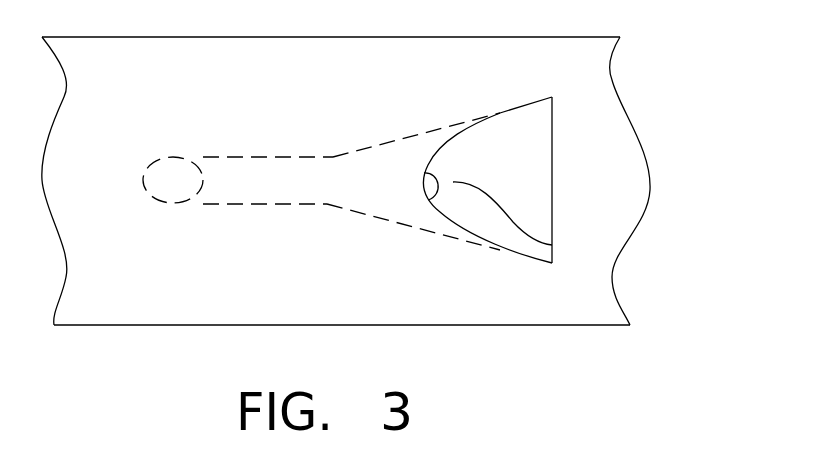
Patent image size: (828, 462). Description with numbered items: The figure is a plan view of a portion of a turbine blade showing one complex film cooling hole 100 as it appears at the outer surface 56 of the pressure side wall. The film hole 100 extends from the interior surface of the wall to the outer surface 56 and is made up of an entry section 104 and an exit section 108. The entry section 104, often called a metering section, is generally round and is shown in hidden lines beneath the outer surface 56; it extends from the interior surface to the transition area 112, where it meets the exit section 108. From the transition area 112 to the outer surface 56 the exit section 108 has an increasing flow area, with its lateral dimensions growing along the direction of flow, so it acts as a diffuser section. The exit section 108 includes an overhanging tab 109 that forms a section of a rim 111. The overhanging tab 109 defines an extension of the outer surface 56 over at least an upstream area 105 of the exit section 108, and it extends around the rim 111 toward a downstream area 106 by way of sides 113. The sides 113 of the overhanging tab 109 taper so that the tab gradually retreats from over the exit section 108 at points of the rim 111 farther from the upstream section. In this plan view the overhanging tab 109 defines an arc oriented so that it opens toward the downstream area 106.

The outer surface 56 is at (160, 103).
The film cooling hole 100 is at (392, 92).
The entry section 104 is at (260, 206).
The upstream area 105 is at (427, 198).
The downstream area 106 is at (530, 146).
The exit section 108 is at (545, 243).
The overhanging tab 109 is at (383, 162).
The rim 111 is at (650, 167).
The transition area 112 is at (258, 157).
The sides 113 is at (477, 122).